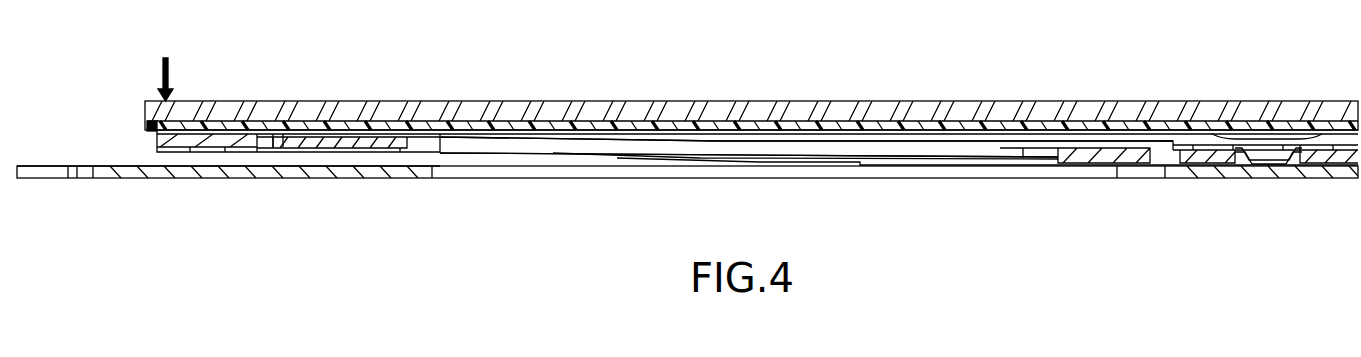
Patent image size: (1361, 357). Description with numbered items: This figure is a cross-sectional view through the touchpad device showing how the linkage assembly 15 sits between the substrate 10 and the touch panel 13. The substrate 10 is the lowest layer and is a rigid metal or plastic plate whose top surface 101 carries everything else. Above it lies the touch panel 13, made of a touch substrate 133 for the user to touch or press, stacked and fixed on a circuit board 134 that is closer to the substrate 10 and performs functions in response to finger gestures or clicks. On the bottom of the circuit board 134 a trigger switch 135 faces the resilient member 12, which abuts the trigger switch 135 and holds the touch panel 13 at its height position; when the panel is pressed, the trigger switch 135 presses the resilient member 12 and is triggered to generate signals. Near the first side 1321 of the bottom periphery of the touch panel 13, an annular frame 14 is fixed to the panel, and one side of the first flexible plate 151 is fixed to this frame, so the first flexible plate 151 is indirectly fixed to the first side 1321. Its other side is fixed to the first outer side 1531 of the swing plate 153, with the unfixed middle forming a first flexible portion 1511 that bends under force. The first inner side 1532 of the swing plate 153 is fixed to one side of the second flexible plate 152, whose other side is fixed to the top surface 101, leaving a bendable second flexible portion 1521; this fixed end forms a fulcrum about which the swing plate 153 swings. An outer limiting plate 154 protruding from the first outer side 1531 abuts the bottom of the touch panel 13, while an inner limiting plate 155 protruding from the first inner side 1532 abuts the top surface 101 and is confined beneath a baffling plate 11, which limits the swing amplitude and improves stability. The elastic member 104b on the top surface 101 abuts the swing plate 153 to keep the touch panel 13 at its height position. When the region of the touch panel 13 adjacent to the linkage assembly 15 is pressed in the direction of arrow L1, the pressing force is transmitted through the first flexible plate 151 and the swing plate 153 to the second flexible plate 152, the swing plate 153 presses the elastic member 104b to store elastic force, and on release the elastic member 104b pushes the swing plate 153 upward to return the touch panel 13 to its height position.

The substrate 10 is at (105, 173).
The top surface 101 is at (120, 165).
The baffling plate 11 is at (1220, 148).
The resilient member 12 is at (1270, 153).
The touch panel 13 is at (890, 50).
The touch substrate 133 is at (812, 113).
The circuit board 134 is at (878, 128).
The first side 1321 is at (163, 128).
The trigger switch 135 is at (1266, 136).
The annular frame 14 is at (177, 134).
The linkage assembly 15 is at (633, 133).
The first flexible plate 151 is at (318, 149).
The first flexible portion 1511 is at (258, 148).
The second flexible plate 152 is at (1045, 165).
The second flexible portion 1521 is at (1147, 163).
The swing plate 153 is at (717, 147).
The first outer side 1531 is at (360, 145).
The first inner side 1532 is at (1160, 140).
The outer limiting plate 154 is at (278, 135).
The inner limiting plate 155 is at (1225, 160).
The elastic member 104b is at (617, 158).
The arrow L1 is at (170, 72).